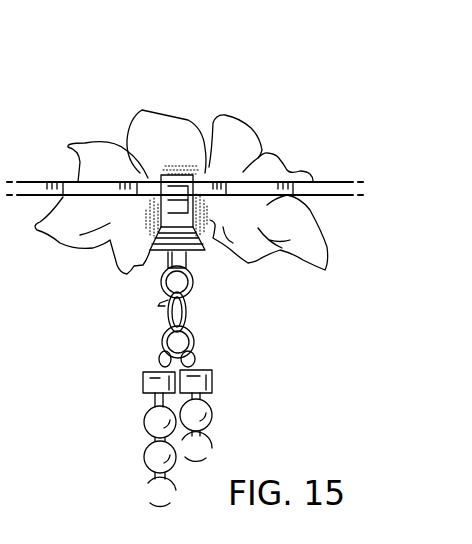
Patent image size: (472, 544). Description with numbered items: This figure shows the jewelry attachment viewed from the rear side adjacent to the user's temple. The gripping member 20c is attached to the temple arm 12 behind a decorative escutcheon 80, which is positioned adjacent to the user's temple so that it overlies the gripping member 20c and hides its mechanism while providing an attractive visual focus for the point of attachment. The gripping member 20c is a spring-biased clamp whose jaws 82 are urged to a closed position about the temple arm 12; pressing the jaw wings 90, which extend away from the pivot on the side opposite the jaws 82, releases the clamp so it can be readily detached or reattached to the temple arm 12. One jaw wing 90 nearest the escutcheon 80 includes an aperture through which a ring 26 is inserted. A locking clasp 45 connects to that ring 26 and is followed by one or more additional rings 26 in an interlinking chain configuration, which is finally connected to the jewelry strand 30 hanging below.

The temple arm 12 is at (342, 192).
The gripping member 20c is at (203, 183).
The ring 26 is at (190, 263).
The jewelry strand 30 is at (212, 412).
The locking clasp 45 is at (192, 293).
The decorative escutcheon 80 is at (143, 110).
The jaws 82 is at (168, 181).
The jaw wings 90 is at (152, 243).